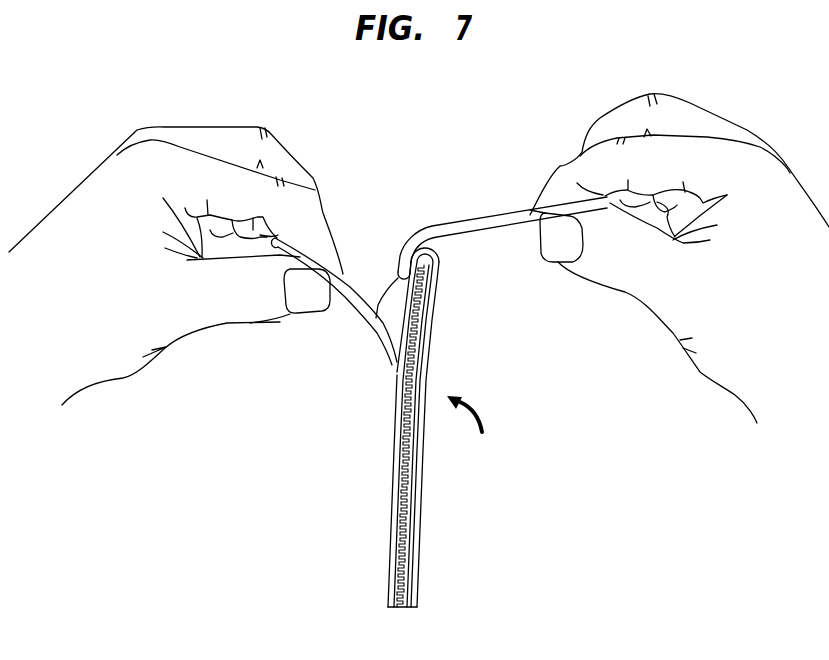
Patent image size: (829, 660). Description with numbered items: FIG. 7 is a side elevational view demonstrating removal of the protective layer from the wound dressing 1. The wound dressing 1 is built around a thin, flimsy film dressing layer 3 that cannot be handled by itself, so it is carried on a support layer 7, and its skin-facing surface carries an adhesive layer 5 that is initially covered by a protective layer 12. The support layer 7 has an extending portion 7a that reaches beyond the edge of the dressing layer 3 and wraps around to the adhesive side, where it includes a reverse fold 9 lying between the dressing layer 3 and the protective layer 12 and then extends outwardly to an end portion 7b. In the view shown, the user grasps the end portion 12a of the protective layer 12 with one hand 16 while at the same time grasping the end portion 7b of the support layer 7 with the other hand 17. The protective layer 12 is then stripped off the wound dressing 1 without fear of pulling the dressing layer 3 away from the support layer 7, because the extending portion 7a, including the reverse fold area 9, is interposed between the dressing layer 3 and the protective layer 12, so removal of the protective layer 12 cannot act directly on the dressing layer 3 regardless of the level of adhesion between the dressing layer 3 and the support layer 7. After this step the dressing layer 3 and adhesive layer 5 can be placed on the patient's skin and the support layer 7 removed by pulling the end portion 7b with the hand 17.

The wound dressing 1 is at (466, 430).
The dressing layer 3 is at (414, 327).
The adhesive layer 5 is at (400, 362).
The support layer 7 is at (418, 527).
The extending portion 7a is at (439, 251).
The end portion 7b is at (545, 197).
The reverse fold 9 is at (366, 328).
The protective layer 12 is at (353, 315).
The end portion 12a is at (336, 264).
The hand 16 is at (322, 215).
The hand 17 is at (572, 163).